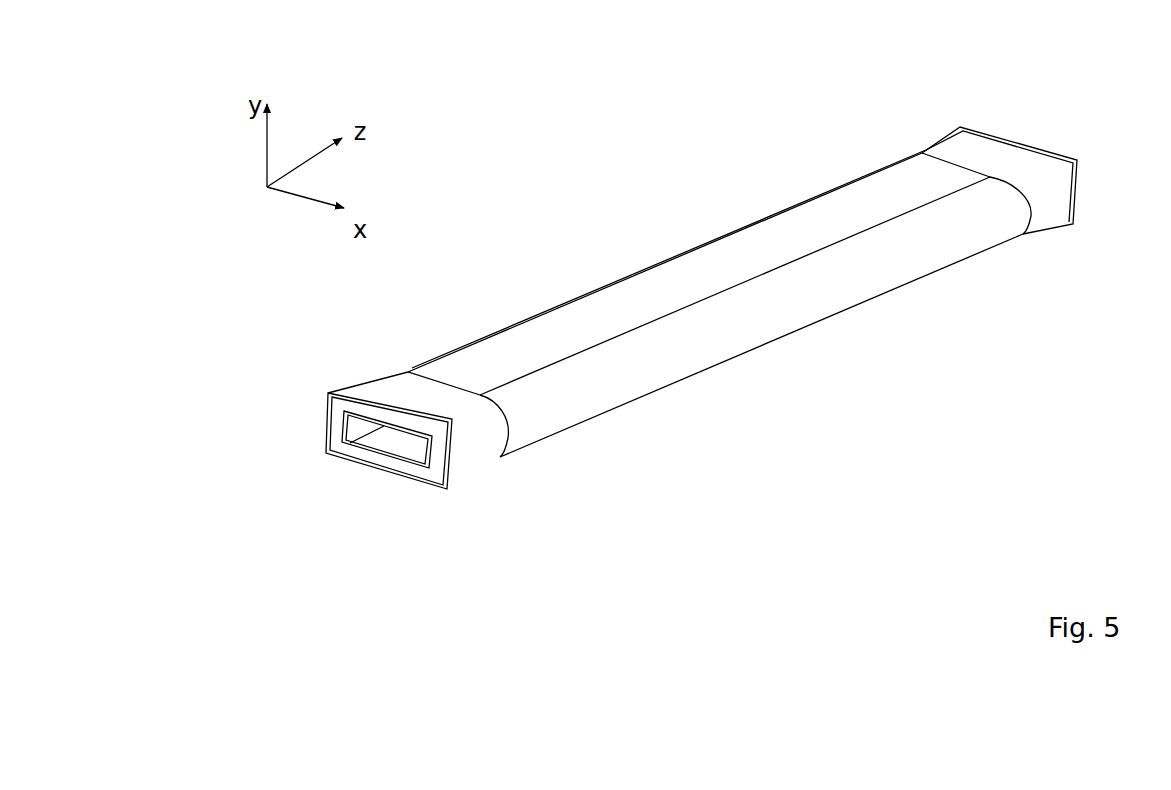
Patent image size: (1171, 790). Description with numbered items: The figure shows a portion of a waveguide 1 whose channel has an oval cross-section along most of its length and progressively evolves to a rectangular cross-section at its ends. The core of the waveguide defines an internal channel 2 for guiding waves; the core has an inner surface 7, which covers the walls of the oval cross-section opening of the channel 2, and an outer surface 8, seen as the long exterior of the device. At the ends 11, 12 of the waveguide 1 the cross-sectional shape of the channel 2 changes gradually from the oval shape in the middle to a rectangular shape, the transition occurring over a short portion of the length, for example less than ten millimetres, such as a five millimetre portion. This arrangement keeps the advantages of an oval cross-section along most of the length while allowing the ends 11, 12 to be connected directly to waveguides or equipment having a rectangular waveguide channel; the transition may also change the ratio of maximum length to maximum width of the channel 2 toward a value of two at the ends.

The waveguide 1 is at (727, 344).
The internal channel 2 is at (378, 440).
The inner surface 7 is at (368, 440).
The outer surface 8 is at (678, 272).
The end of the waveguide 11 is at (435, 456).
The end of the waveguide 12 is at (1062, 197).